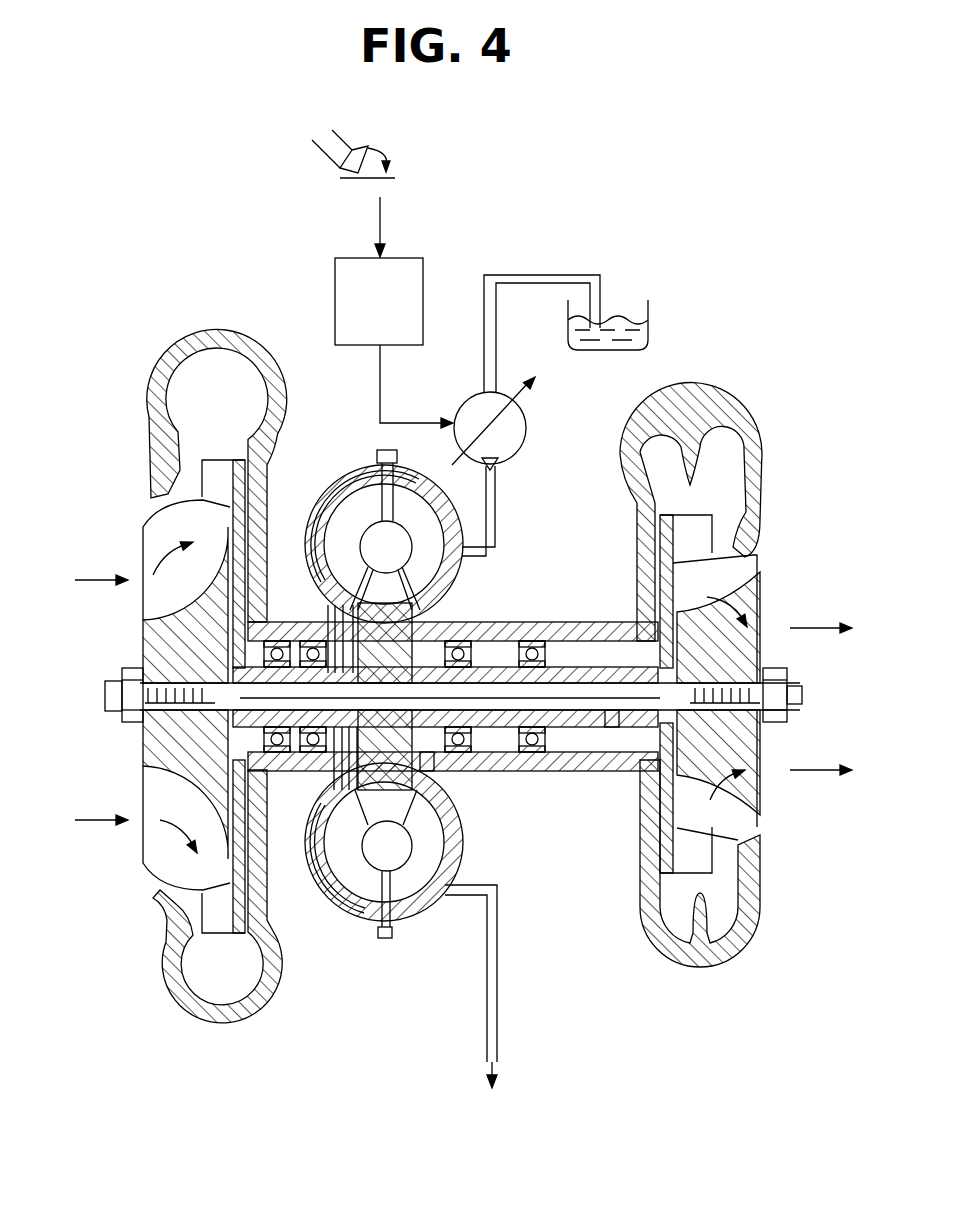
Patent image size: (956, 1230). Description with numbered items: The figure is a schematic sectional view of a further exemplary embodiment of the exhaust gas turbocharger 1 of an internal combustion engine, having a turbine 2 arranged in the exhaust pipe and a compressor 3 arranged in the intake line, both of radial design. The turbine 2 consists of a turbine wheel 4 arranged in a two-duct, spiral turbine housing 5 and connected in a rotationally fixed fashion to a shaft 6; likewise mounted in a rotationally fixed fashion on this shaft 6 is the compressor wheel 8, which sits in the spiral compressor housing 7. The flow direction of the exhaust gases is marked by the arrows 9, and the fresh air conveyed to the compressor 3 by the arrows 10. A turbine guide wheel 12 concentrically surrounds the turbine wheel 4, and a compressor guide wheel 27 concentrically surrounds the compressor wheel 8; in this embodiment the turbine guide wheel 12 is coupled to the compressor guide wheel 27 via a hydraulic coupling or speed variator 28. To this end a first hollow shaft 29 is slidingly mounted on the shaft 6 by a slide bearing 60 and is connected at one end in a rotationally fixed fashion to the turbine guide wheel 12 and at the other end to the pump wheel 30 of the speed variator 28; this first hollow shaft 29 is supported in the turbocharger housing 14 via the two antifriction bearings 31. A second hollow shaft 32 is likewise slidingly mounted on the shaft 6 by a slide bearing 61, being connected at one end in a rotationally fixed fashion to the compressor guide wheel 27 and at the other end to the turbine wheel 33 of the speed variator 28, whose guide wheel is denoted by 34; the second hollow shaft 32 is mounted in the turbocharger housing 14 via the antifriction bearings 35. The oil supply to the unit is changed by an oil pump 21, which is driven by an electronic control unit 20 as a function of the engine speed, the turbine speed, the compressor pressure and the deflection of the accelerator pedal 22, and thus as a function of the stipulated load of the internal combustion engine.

The exhaust gas turbocharger 1 is at (458, 980).
The turbine 2 is at (785, 425).
The compressor 3 is at (132, 438).
The turbine wheel 4 is at (750, 728).
The turbine housing 5 is at (708, 393).
The shaft 6 is at (500, 698).
The compressor housing 7 is at (202, 328).
The compressor wheel 8 is at (168, 782).
The arrows (exhaust gas flow direction) 9 is at (755, 600).
The arrows (fresh air flow direction) 10 is at (140, 560).
The turbine guide wheel 12 is at (693, 522).
The turbocharger housing 14 is at (457, 627).
The electronic control unit 20 is at (400, 318).
The oil pump 21 is at (517, 428).
The accelerator pedal 22 is at (358, 170).
The compressor guide wheel 27 is at (217, 477).
The speed variator 28 is at (375, 946).
The first hollow shaft 29 is at (570, 723).
The pump wheel 30 is at (397, 803).
The antifriction bearings 31 is at (500, 638).
The second hollow shaft 32 is at (322, 772).
The turbine wheel of the speed variator 33 is at (362, 877).
The guide wheel of the speed variator 34 is at (420, 873).
The antifriction bearings 35 is at (290, 632).
The slide bearing 60 is at (427, 772).
The slide bearing 61 is at (383, 612).